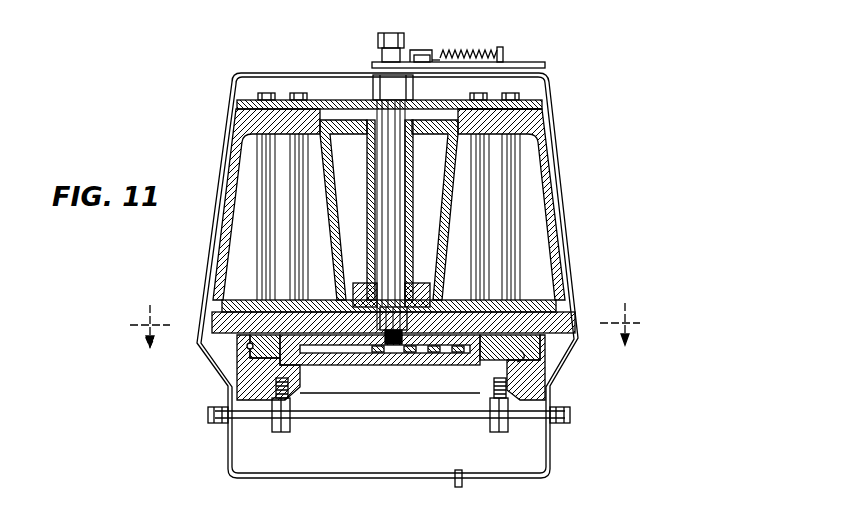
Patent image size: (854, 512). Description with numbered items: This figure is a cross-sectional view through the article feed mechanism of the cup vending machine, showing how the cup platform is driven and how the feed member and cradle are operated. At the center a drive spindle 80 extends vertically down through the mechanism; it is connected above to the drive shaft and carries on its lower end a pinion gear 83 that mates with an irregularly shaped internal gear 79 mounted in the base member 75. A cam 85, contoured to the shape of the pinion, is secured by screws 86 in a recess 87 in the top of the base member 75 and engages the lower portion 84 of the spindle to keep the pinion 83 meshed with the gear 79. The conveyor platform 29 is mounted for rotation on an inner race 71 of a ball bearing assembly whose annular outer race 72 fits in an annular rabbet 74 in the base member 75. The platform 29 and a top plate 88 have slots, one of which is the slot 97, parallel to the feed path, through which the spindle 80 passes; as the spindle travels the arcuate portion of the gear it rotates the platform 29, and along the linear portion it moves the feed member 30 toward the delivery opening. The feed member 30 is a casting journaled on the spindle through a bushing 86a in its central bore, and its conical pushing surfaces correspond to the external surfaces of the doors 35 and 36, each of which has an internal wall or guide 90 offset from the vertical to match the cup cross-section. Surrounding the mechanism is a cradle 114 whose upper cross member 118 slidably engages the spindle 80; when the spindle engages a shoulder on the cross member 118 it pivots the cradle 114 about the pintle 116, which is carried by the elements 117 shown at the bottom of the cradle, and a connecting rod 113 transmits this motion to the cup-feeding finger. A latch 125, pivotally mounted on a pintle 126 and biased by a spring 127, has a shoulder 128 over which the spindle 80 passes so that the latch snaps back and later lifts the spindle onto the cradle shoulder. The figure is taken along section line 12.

The drive spindle 80 is at (384, 34).
The pintle 126 is at (415, 50).
The latch 125 is at (465, 20).
The shoulder 128 is at (428, 55).
The spring 127 is at (489, 42).
The cradle 114 is at (275, 72).
The upper cross member 118 is at (317, 72).
The top plate 88 is at (540, 101).
The door 36 is at (556, 163).
The door 35 is at (233, 152).
The internal wall or guide 90 is at (328, 191).
The feed member 30 is at (409, 191).
The bushing 86a is at (400, 226).
The pinion gear 83 is at (384, 322).
The slot 97 is at (402, 325).
The internal gear 79 is at (450, 340).
The conveyor platform 29 is at (216, 322).
The section line 12 is at (386, 325).
The annular outer race 72 is at (244, 347).
The annular rabbet 74 is at (255, 378).
The inner race 71 is at (512, 355).
The lower portion of the spindle 84 is at (383, 356).
The cam 85 is at (418, 355).
The screws 86 is at (440, 354).
The recess 87 is at (460, 354).
The collar 117 is at (290, 428).
The pintle 116 is at (404, 425).
The base member 75 is at (496, 400).
The connecting rod 113 is at (462, 476).